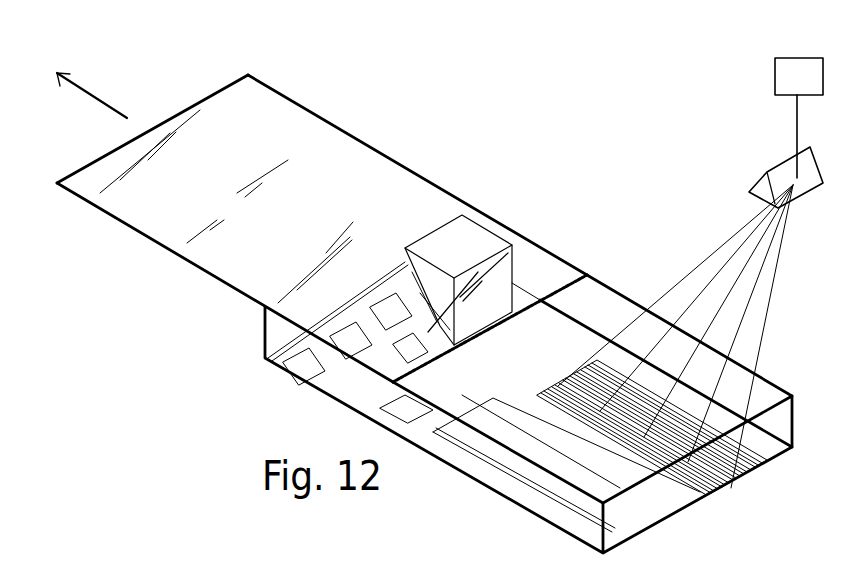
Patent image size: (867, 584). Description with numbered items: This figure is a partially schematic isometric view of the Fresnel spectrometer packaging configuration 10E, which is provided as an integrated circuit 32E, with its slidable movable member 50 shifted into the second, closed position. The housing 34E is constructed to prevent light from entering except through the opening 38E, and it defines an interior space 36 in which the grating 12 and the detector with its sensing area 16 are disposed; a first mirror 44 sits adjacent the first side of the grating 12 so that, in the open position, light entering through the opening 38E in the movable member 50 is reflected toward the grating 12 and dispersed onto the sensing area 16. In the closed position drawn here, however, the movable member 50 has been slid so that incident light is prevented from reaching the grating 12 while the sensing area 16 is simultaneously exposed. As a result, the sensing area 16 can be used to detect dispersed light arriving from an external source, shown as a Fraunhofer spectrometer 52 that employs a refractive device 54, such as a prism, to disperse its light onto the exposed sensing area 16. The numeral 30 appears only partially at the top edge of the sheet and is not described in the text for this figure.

The Fresnel spectrometer packaging configuration 10E is at (530, 104).
The grating 12 is at (525, 270).
The sensing area 16 is at (717, 470).
The flow direction 30 is at (438, 5).
The integrated circuit 32E is at (333, 377).
The housing 34E is at (617, 293).
The interior space 36 is at (557, 450).
The opening 38E is at (473, 240).
The first mirror 44 is at (442, 268).
The movable member 50 is at (395, 183).
The Fraunhofer spectrometer 52 is at (795, 72).
The refractive device 54 is at (810, 180).